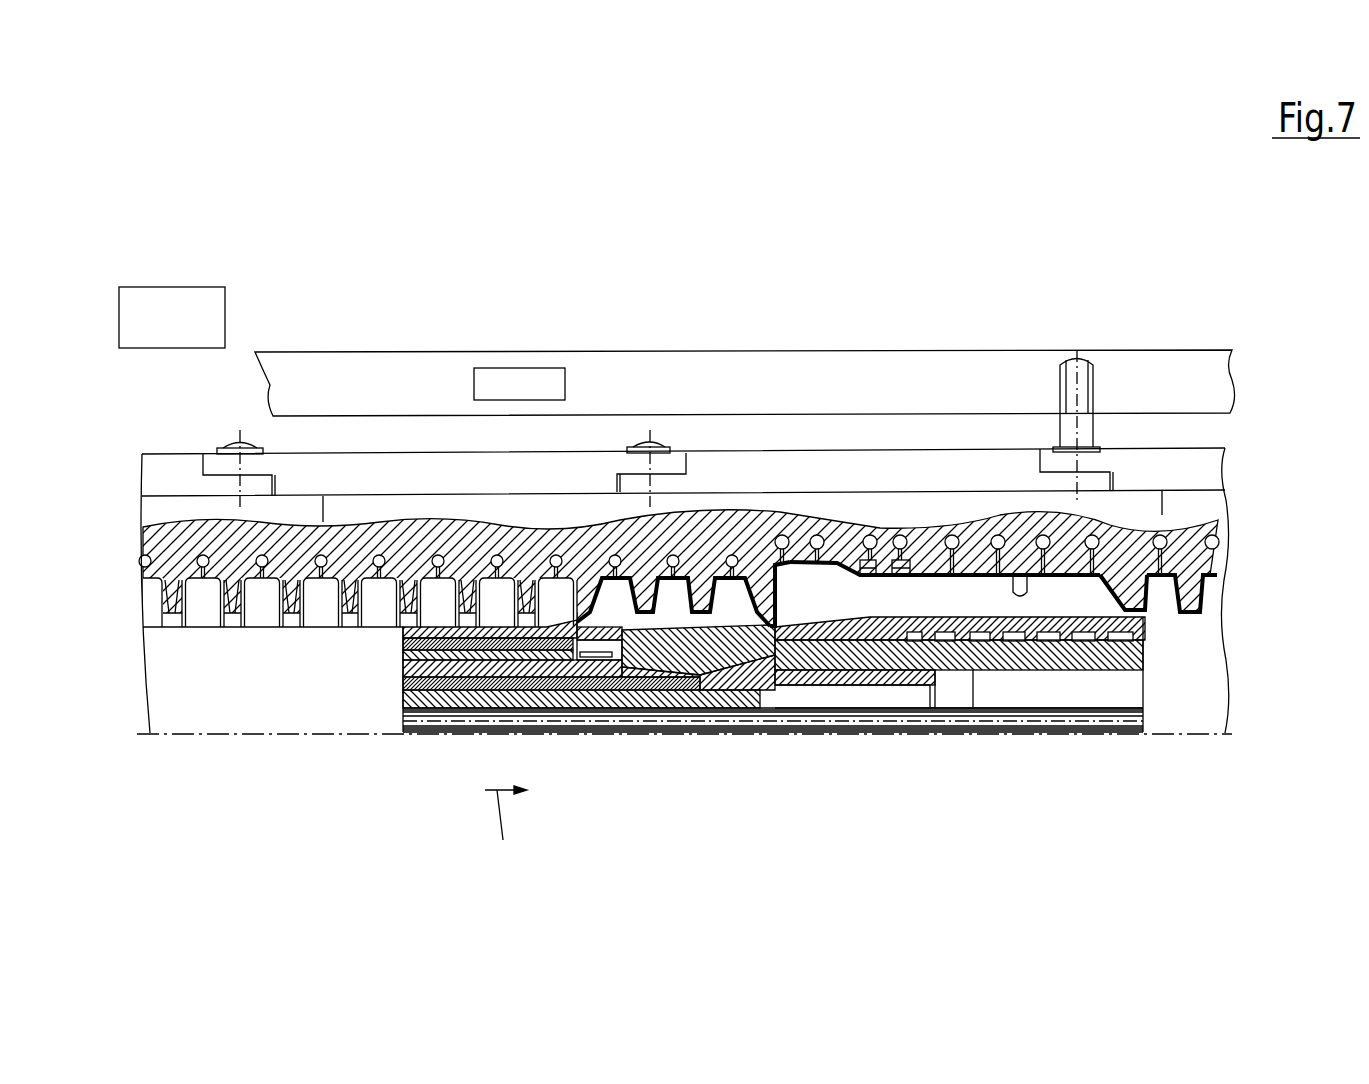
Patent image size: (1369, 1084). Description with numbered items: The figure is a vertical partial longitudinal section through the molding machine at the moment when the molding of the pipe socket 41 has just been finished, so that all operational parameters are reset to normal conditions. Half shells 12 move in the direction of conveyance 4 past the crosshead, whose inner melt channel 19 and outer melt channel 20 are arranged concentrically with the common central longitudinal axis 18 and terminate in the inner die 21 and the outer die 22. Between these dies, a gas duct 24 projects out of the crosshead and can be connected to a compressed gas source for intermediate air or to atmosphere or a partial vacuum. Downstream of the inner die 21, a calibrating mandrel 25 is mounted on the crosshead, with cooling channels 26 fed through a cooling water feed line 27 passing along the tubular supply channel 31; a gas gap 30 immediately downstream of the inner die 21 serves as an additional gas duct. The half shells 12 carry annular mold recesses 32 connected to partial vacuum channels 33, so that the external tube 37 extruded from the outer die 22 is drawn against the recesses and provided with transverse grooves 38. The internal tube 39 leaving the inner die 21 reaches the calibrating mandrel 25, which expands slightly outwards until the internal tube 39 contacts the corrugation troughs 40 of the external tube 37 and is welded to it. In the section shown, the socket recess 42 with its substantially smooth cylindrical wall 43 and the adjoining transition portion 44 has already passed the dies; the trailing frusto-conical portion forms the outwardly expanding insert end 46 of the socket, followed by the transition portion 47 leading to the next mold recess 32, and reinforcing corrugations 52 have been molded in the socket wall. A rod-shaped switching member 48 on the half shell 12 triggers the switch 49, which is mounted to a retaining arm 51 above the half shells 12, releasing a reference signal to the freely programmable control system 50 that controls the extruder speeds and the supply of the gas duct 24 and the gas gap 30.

The direction of conveyance 4 is at (506, 831).
The half shell 12 is at (712, 508).
The central longitudinal axis 18 is at (143, 735).
The inner melt channel 19 is at (403, 670).
The outer melt channel 20 is at (403, 640).
The inner die 21 is at (733, 680).
The outer die 22 is at (575, 628).
The gas duct 24 is at (628, 633).
The calibrating mandrel 25 is at (1007, 682).
The cooling channels 26 is at (1145, 631).
The cooling water feed line 27 is at (1145, 718).
The gas gap 30 is at (780, 665).
The supply channel 31 is at (875, 697).
The mold recesses 32 is at (197, 602).
The partial vacuum channels 33 is at (205, 563).
The external tube 37 is at (583, 590).
The transverse grooves 38 is at (1210, 588).
The internal tube 39 is at (752, 558).
The corrugation troughs 40 is at (1190, 610).
The pipe socket 41 is at (1017, 576).
The socket recess 42 is at (1080, 614).
The wall 43 is at (983, 572).
The transition portion 44 is at (1128, 572).
The insert end 46 is at (848, 550).
The transition portion 47 is at (777, 588).
The switching member 48 is at (1082, 370).
The switch 49 is at (510, 380).
The control system 50 is at (217, 328).
The retaining arm 51 is at (410, 385).
The reinforcing corrugations 52 is at (893, 556).